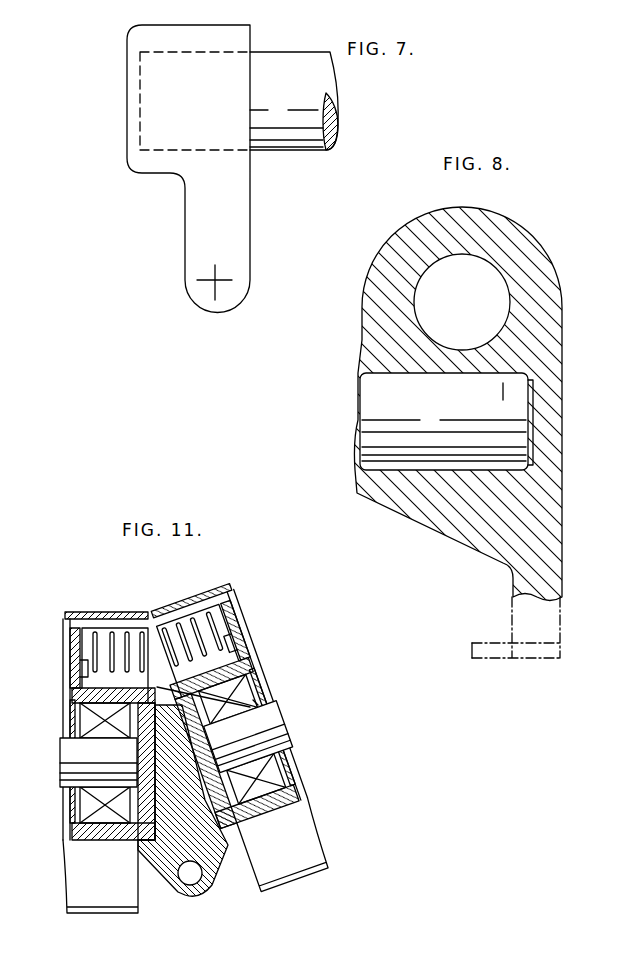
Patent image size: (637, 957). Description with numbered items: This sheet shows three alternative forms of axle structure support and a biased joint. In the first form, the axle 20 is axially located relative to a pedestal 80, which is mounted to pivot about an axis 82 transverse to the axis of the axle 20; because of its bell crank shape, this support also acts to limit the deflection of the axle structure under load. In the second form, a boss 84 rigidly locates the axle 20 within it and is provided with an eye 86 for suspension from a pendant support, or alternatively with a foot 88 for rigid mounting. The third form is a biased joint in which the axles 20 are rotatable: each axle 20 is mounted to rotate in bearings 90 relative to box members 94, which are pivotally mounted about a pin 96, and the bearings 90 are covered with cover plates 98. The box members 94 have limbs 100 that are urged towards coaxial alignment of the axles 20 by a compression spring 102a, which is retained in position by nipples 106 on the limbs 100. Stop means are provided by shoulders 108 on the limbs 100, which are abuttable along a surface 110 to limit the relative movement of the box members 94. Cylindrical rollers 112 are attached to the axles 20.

In FIG. 7, the axle 20 is at (297, 82).
In FIG. 8, the axle 20 is at (447, 401).
In FIG. 11, the axle 20 is at (68, 757).
In FIG. 7, the pedestal 80 is at (217, 185).
In FIG. 7, the axis 82 is at (215, 292).
In FIG. 8, the boss 84 is at (458, 515).
In FIG. 8, the eye 86 is at (453, 295).
In FIG. 8, the foot 88 is at (485, 643).
In FIG. 11, the bearings 90 is at (103, 728).
In FIG. 11, the box members 94 is at (152, 785).
In FIG. 11, the pin 96 is at (183, 880).
In FIG. 11, the cover plates 98 is at (255, 700).
In FIG. 11, the limbs 100 is at (100, 622).
In FIG. 11, the compression spring 102a is at (130, 630).
In FIG. 11, the nipples 106 is at (92, 653).
In FIG. 11, the shoulders 108 is at (165, 722).
In FIG. 11, the surface 110 is at (200, 697).
In FIG. 11, the cylindrical rollers 112 is at (80, 608).